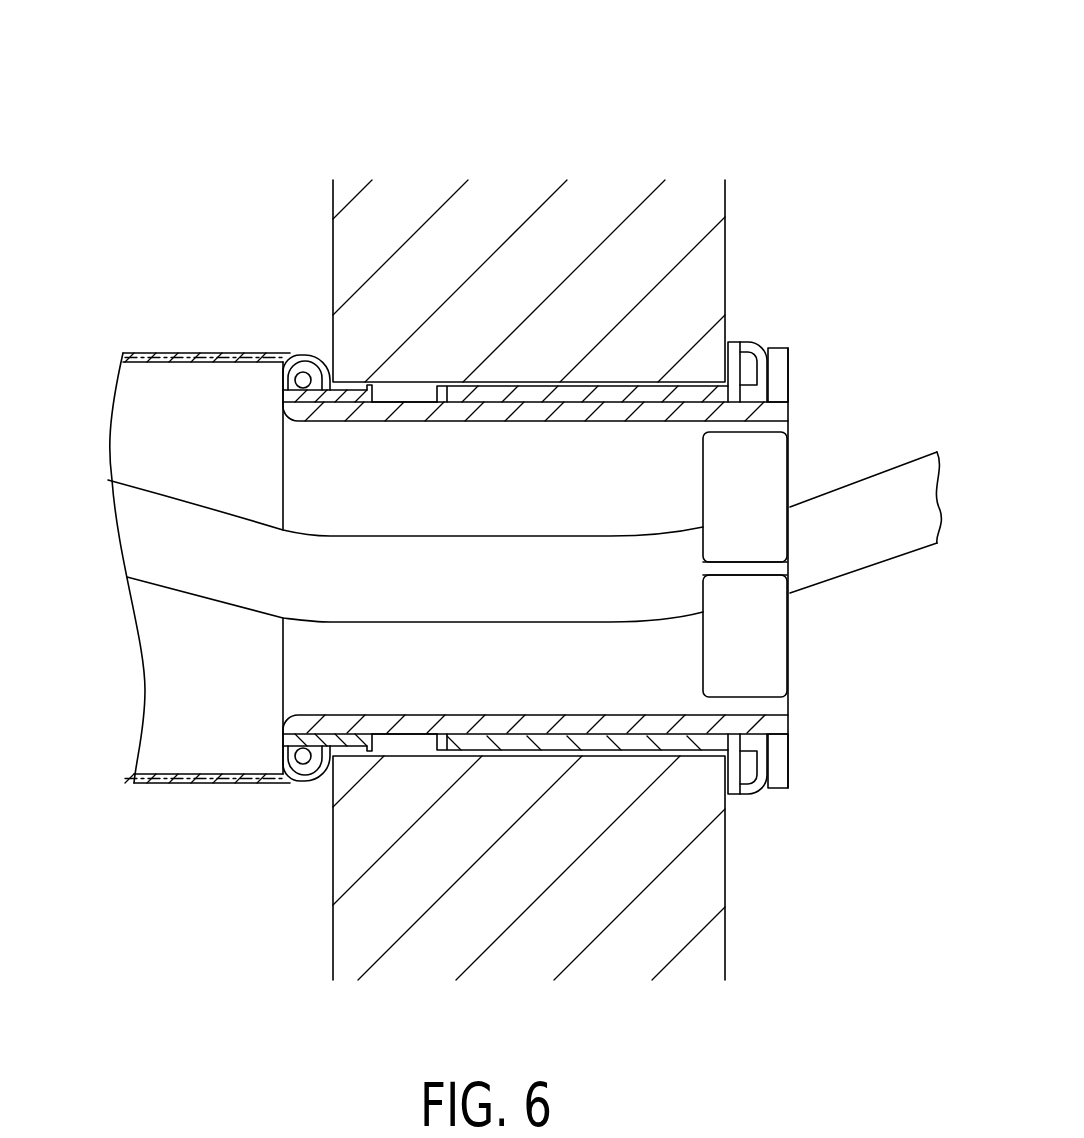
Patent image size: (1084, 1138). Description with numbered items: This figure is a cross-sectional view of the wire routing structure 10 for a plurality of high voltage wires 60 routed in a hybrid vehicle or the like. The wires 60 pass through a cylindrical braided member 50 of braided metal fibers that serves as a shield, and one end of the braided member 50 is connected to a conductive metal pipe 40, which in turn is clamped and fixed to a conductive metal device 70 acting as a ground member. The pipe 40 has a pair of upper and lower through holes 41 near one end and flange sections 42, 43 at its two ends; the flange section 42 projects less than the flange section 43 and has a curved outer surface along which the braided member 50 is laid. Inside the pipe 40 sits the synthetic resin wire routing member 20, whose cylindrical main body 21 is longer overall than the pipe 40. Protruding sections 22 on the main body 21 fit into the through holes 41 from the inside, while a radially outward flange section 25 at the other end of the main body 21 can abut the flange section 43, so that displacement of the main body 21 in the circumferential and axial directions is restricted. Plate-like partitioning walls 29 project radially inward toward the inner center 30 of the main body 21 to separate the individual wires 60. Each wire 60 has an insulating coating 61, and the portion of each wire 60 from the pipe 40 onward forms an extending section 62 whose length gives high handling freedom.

The wire routing structure 10 is at (536, 506).
The wire routing member 20 is at (648, 412).
The main body 21 is at (620, 728).
The protruding section 22 is at (408, 400).
The flange section 25 is at (810, 360).
The partitioning wall 29 is at (780, 472).
The inner center 30 is at (780, 567).
The pipe 40 is at (281, 547).
The through hole 41 is at (370, 397).
The flange section 42 is at (294, 371).
The flange section 43 is at (738, 347).
The braided member 50 is at (158, 353).
The wire 60 is at (145, 492).
The coating 61 is at (903, 548).
The extending section 62 is at (908, 478).
The device 70 is at (725, 198).